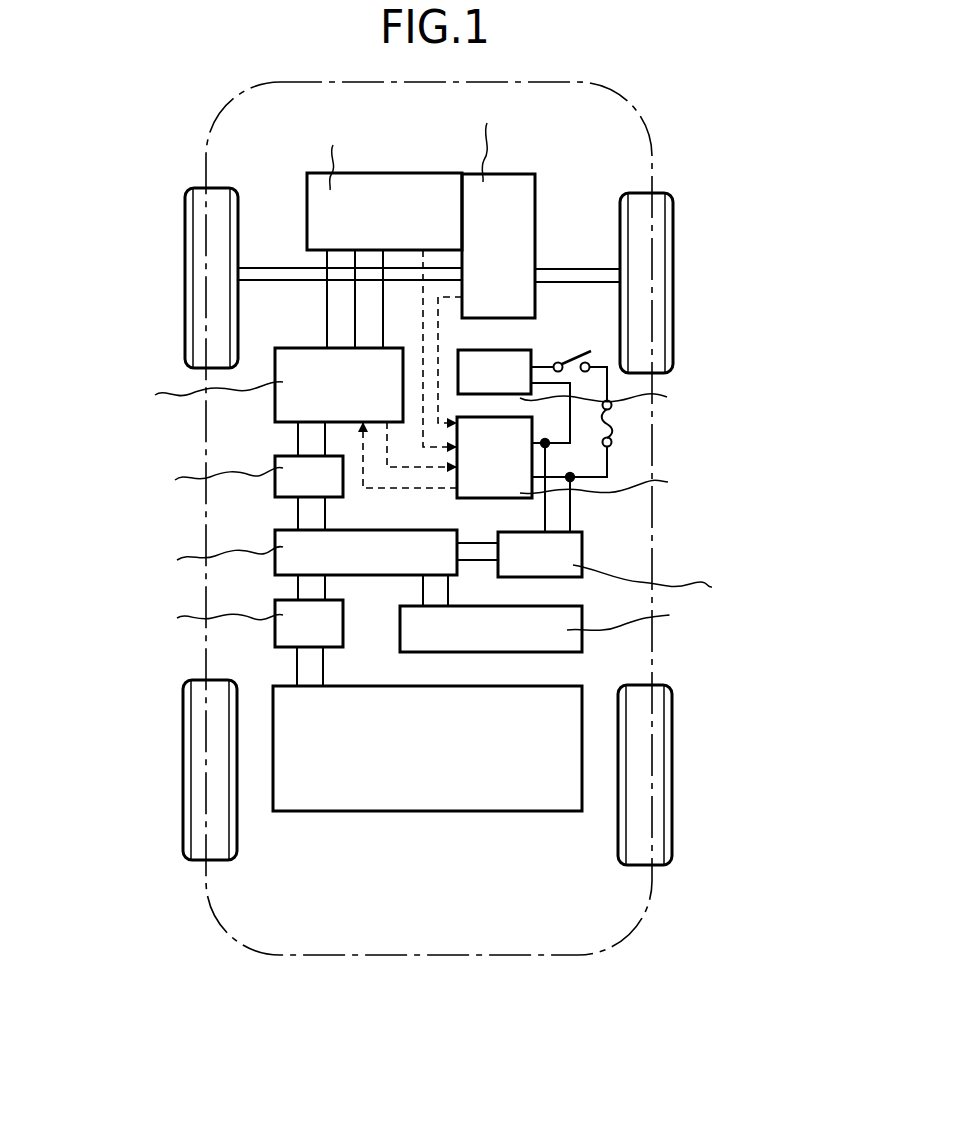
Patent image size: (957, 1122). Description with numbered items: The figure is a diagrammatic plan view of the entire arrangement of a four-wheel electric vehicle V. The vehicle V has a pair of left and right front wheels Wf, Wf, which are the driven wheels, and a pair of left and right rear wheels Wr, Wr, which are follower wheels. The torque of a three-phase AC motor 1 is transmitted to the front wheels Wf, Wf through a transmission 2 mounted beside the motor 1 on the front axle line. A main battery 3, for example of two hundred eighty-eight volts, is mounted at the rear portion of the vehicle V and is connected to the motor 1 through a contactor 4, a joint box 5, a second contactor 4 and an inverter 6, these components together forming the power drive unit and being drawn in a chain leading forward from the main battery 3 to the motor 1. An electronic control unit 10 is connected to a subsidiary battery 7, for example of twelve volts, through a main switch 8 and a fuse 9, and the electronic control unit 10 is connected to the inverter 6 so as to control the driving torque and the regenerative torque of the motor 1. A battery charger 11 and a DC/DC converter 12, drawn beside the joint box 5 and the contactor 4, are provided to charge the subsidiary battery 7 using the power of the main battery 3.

The three-phase AC motor 1 is at (375, 228).
The transmission 2 is at (489, 268).
The main battery 3 is at (416, 760).
The contactor 4 is at (303, 494).
The joint box 5 is at (358, 568).
The inverter 6 is at (329, 401).
The subsidiary battery 7 is at (486, 389).
The main switch 8 is at (584, 353).
The fuse 9 is at (613, 422).
The electronic control unit 10 is at (481, 472).
The battery charger 11 is at (476, 643).
The DC/DC converter 12 is at (526, 573).
The front wheels Wf is at (185, 258).
The rear wheels Wr is at (183, 752).
The electric vehicle V is at (660, 512).